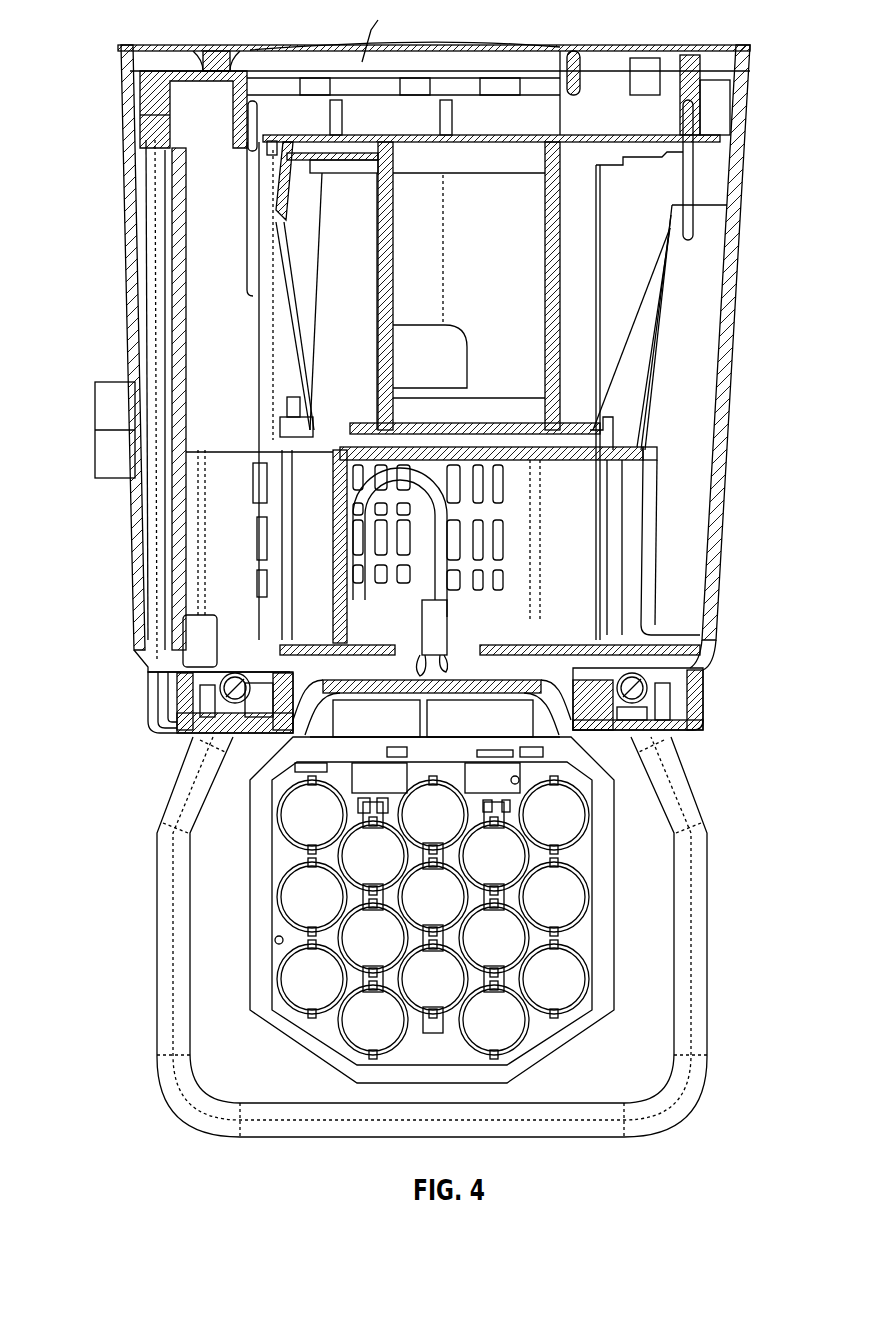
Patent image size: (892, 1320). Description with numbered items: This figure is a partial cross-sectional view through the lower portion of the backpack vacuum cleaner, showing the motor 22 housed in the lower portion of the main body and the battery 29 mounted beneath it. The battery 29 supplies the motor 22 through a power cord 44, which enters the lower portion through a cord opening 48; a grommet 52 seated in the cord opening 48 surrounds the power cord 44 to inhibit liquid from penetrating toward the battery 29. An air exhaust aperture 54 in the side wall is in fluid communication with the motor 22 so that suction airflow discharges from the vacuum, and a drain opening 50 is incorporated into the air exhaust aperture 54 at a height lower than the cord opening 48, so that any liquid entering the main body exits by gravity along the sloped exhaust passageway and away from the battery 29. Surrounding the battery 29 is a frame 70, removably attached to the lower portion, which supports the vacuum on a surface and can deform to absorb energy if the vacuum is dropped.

The motor 22 is at (510, 283).
The battery 29 is at (552, 893).
The power cord 44 is at (440, 566).
The cord opening 48 is at (507, 608).
The drain opening 50 is at (465, 598).
The grommet 52 is at (392, 618).
The air exhaust aperture 54 is at (531, 558).
The frame 70 is at (700, 1043).